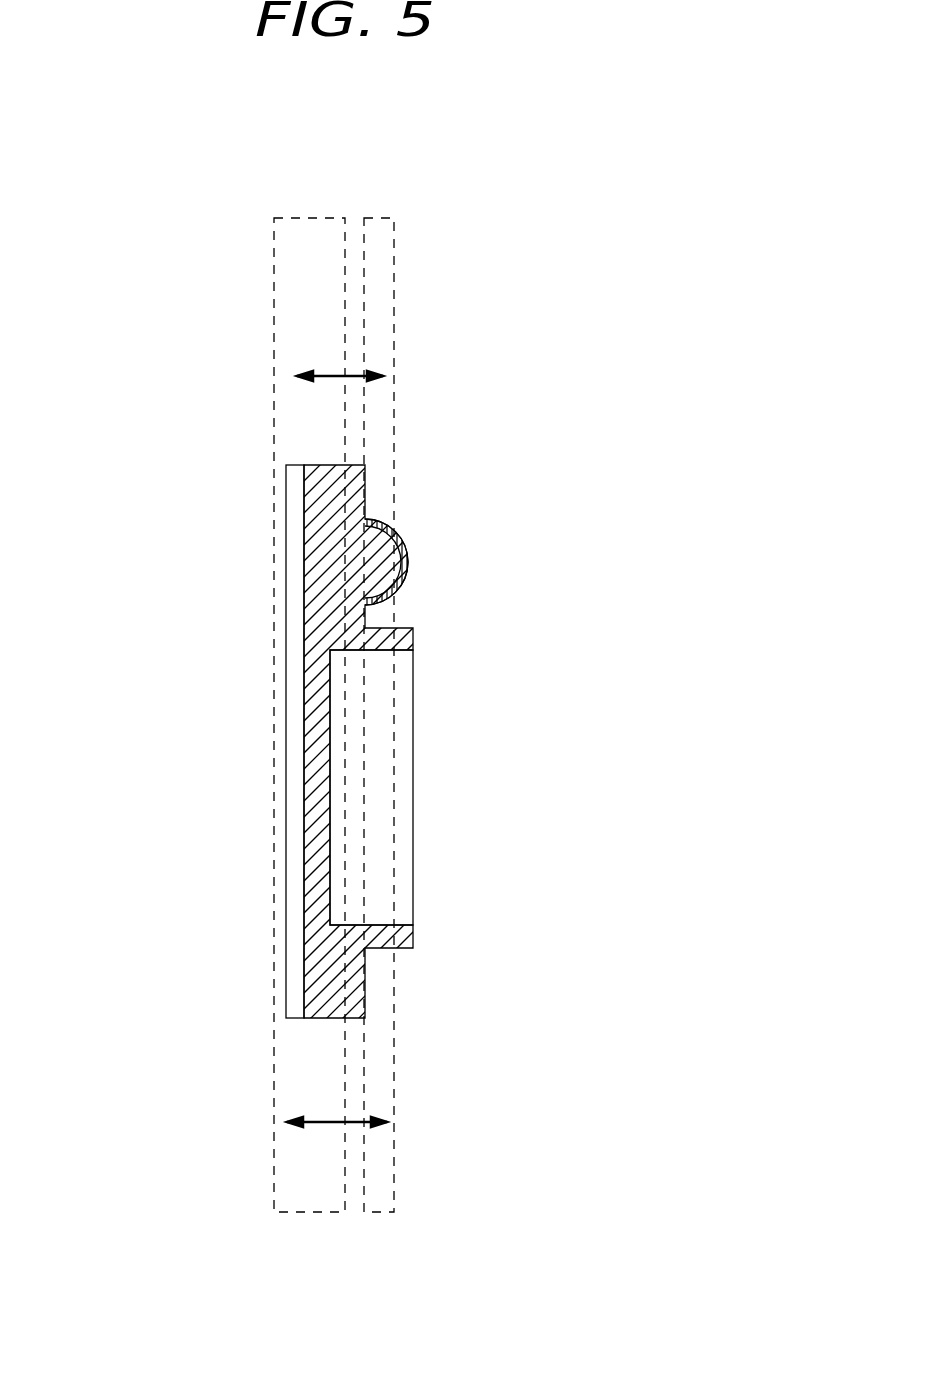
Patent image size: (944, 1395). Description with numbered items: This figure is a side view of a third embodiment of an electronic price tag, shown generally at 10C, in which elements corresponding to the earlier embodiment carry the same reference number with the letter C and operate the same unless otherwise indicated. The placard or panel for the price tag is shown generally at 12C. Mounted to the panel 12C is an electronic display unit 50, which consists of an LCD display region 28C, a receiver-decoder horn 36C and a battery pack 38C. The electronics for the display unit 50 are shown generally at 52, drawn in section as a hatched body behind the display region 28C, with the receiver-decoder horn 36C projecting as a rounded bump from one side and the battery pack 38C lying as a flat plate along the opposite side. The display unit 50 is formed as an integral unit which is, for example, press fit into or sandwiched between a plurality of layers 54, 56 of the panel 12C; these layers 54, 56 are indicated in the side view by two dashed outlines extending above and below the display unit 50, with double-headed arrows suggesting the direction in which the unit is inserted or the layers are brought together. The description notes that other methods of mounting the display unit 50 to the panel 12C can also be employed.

The electronic price tag 10C is at (573, 354).
The placard or panel 12C is at (389, 1281).
The LCD display region 28C is at (413, 750).
The receiver-decoder horn 36C is at (408, 572).
The battery pack 38C is at (298, 992).
The electronic display unit 50 is at (167, 705).
The electronics 52 is at (318, 530).
The layer 54 is at (300, 1214).
The layer 56 is at (400, 1190).